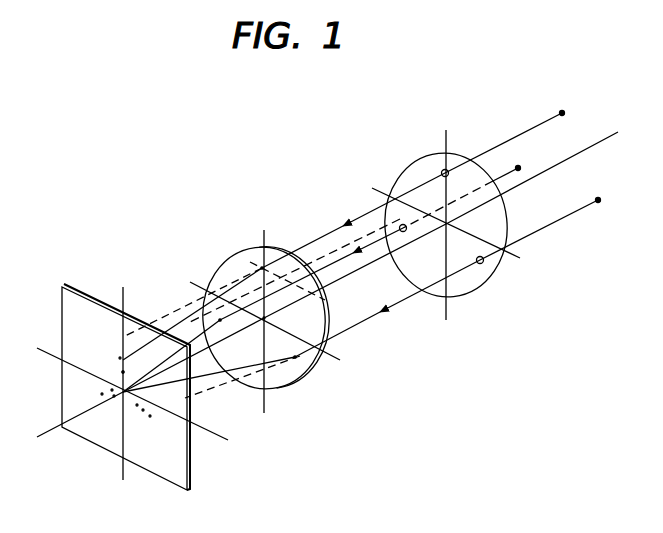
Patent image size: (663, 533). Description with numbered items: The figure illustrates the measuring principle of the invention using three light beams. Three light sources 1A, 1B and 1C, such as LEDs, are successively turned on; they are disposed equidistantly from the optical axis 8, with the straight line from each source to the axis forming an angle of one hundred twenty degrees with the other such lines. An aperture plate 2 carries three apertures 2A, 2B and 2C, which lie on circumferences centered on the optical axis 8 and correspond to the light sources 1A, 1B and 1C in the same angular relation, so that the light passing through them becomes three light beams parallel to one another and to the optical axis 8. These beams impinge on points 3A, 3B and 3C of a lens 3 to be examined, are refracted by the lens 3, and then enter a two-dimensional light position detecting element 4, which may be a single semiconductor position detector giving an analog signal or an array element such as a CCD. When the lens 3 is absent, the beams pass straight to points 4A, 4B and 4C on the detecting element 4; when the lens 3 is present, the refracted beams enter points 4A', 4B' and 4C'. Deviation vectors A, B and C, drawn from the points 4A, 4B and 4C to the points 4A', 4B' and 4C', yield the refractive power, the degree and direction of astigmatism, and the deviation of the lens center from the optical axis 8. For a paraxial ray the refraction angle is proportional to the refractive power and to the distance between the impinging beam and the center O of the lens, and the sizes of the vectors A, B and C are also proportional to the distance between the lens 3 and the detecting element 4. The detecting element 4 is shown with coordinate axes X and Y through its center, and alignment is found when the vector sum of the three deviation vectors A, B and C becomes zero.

The light source 1A is at (566, 110).
The light source 1B is at (521, 166).
The light source 1C is at (598, 200).
The aperture plate 2 is at (422, 164).
The aperture 2A is at (447, 169).
The aperture 2B is at (399, 227).
The aperture 2C is at (483, 262).
The lens to be examined 3 is at (228, 272).
The point on lens 3A is at (262, 266).
The point on lens 3B is at (220, 320).
The point on lens 3C is at (296, 358).
The two-dimensional light position detecting element 4 is at (63, 320).
The point on detecting element 4A is at (102, 316).
The point on detecting element after refraction 4A' is at (94, 353).
The point on detecting element 4B is at (63, 385).
The point on detecting element after refraction 4B' is at (79, 431).
The point on detecting element 4C is at (184, 443).
The point on detecting element after refraction 4C' is at (142, 460).
The optical axis 8 is at (618, 132).
The deviation vector A is at (120, 358).
The deviation vector B is at (102, 394).
The deviation vector C is at (142, 412).
The center of the lens O is at (268, 320).
The X axis X is at (141, 403).
The Y axis Y is at (122, 371).